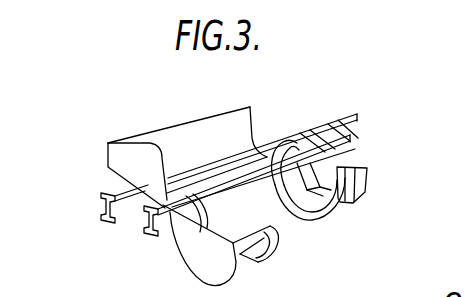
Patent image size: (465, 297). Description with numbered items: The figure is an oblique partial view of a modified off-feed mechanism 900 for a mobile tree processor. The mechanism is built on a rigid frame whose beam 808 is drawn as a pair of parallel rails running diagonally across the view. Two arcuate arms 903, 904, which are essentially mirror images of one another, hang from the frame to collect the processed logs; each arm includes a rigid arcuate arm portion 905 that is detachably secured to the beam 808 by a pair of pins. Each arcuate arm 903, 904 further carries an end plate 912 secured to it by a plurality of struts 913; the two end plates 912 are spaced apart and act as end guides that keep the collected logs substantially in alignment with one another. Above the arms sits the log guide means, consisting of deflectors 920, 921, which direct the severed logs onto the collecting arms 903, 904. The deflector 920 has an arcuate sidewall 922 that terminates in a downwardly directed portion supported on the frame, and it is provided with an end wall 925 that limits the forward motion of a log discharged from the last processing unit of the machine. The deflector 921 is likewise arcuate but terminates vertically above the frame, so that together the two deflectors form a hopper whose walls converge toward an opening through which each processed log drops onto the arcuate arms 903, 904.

The off-feed mechanism 900 is at (300, 91).
The beam 808 is at (347, 126).
The deflector 920 is at (163, 137).
The sidewall 922 is at (190, 132).
The end wall 925 is at (122, 157).
The deflector 921 is at (275, 147).
The arcuate arm portion 905 is at (355, 149).
The arcuate arm 903 is at (343, 208).
The end plate 912 is at (360, 167).
The struts 913 is at (366, 193).
The arcuate arm 904 is at (263, 257).